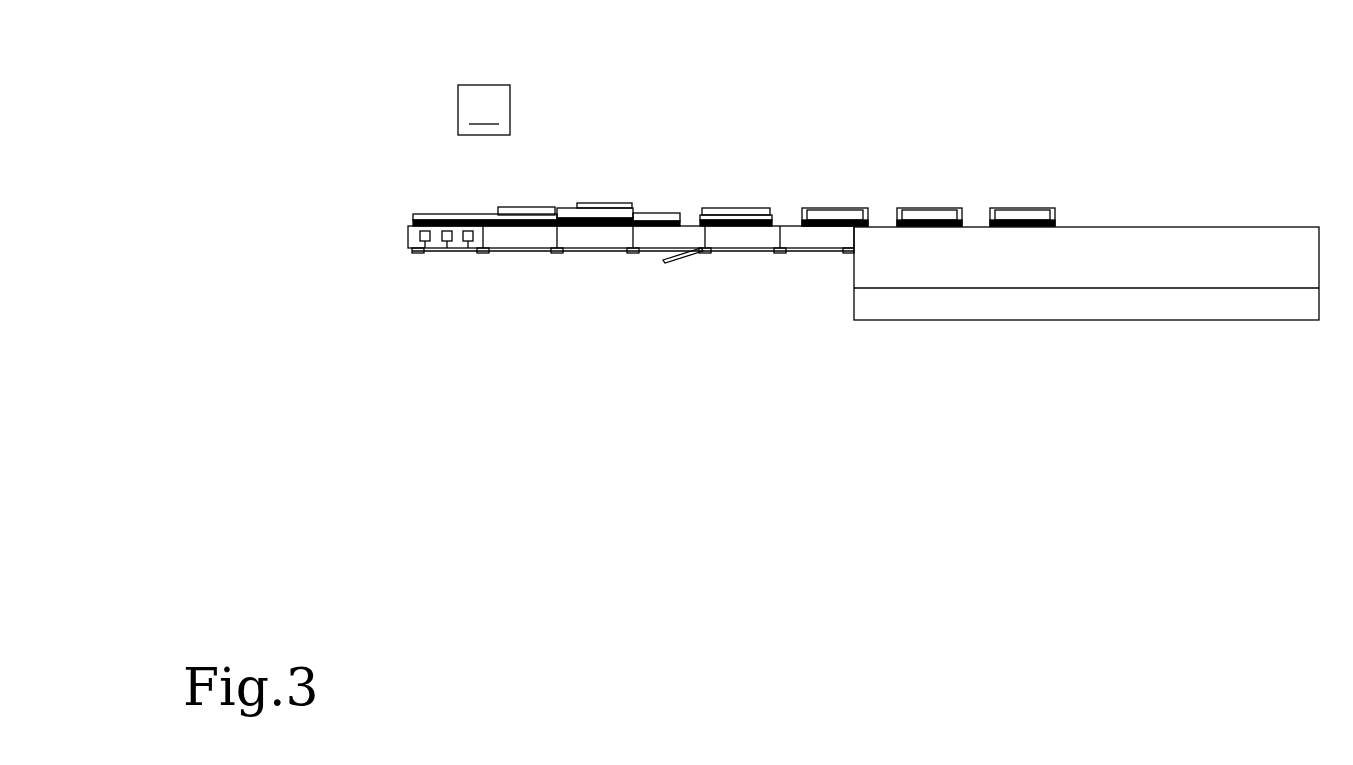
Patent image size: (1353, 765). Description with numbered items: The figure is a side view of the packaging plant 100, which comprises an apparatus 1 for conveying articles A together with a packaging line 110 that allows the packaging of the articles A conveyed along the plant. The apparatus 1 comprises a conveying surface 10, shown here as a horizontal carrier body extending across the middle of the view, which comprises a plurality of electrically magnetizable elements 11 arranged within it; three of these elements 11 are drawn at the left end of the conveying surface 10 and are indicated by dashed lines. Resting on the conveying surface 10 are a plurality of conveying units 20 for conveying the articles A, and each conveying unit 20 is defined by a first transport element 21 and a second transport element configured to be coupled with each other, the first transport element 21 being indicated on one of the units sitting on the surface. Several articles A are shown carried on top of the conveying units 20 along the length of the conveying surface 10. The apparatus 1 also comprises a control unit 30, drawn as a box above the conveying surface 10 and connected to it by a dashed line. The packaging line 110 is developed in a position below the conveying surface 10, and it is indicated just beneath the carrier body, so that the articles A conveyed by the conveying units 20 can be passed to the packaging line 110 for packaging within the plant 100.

The packaging plant 100 is at (811, 271).
The apparatus 1 is at (1086, 373).
The conveying surface 10 is at (579, 233).
The electrically magnetizable elements 11 is at (447, 250).
The conveying unit 20 is at (591, 176).
The first transport element 21 is at (733, 176).
The control unit 30 is at (484, 228).
The packaging line 110 is at (683, 299).
The articles A is at (836, 176).